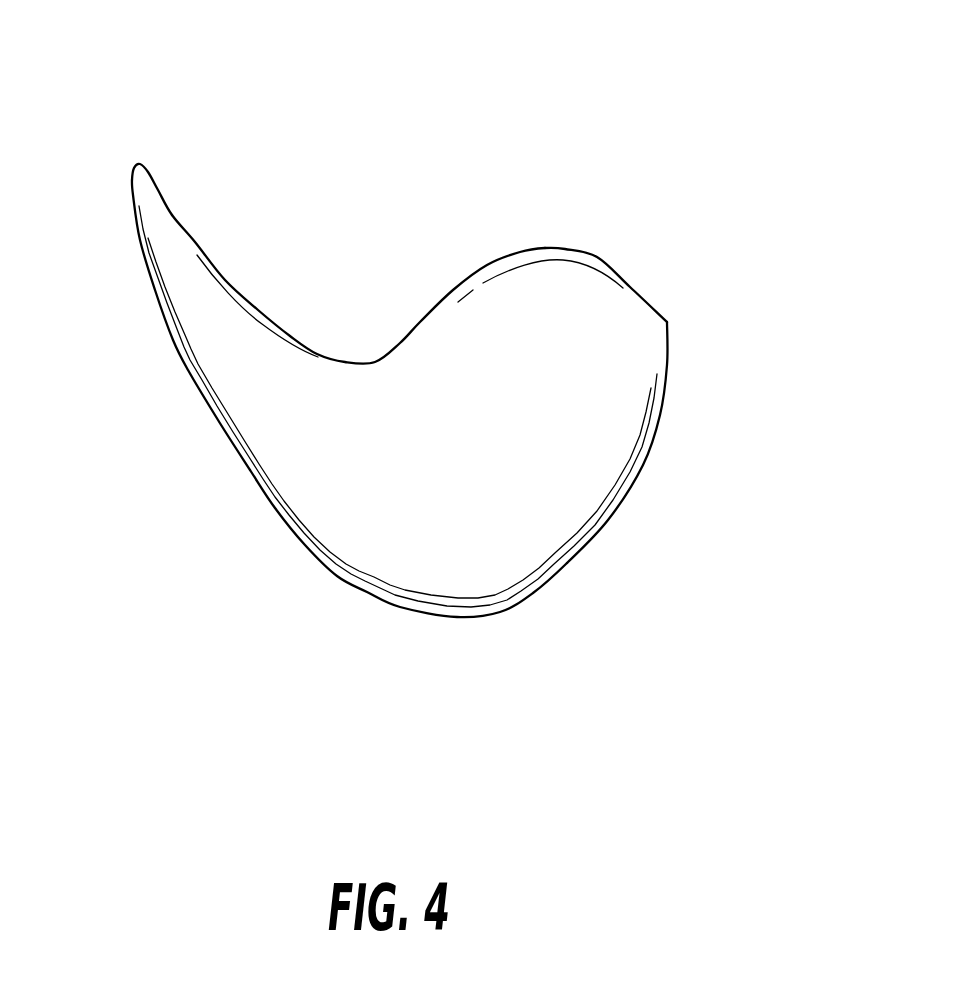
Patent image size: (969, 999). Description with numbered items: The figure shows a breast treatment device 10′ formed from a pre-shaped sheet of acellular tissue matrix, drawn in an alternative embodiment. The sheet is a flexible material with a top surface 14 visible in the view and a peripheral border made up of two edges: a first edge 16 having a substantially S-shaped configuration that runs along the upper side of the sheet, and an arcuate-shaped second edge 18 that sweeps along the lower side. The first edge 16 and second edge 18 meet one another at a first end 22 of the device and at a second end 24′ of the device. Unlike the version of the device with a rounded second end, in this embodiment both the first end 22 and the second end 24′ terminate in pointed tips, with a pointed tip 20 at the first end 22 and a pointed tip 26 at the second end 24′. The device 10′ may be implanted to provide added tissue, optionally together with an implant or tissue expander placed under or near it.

The breast treatment device 10′ is at (613, 161).
The top surface 14 is at (398, 429).
The first edge 16 is at (358, 250).
The second edge 18 is at (408, 587).
The pointed tip 20 is at (128, 163).
The first end 22 is at (174, 325).
The second end 24′ is at (657, 430).
The pointed tip 26 is at (641, 263).